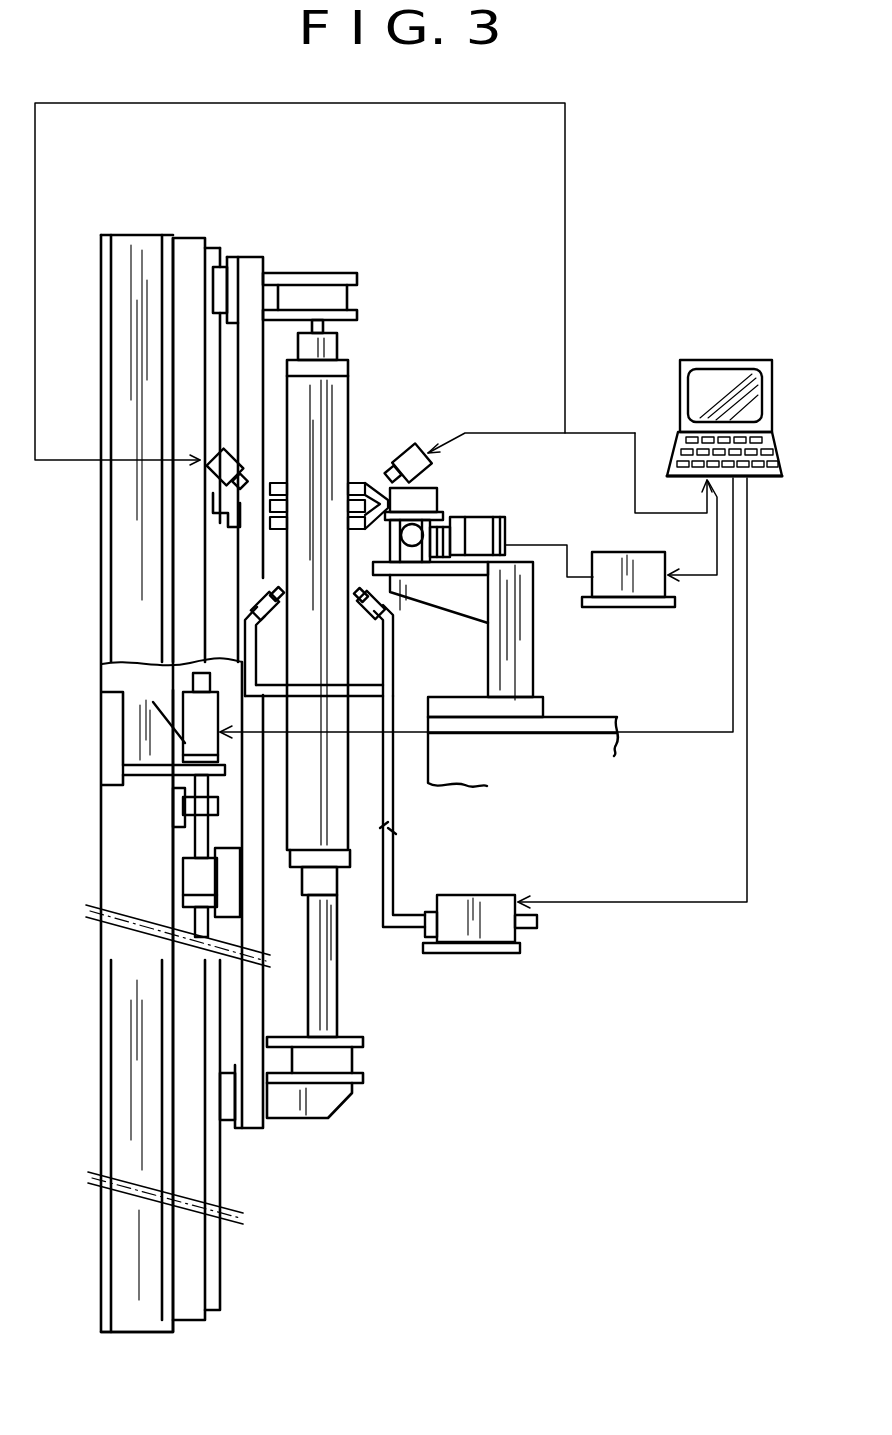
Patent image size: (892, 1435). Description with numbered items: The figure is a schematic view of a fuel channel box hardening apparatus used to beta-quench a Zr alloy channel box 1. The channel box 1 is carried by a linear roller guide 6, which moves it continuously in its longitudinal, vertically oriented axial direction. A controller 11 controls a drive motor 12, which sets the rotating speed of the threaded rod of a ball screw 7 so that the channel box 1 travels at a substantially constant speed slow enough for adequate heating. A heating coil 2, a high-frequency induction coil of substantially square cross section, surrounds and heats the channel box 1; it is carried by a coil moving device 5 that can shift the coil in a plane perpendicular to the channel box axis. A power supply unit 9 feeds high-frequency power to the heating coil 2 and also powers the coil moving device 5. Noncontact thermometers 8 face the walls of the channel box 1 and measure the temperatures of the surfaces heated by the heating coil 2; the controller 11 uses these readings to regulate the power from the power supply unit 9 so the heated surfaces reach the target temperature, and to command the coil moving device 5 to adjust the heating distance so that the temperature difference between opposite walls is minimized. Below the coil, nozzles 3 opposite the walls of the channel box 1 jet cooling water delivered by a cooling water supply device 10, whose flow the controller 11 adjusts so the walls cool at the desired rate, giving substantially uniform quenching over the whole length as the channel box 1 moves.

The channel box 1 is at (351, 407).
The heating coil 2 is at (263, 536).
The nozzles 3 is at (380, 601).
The coil moving device 5 is at (450, 511).
The linear roller guide 6 is at (205, 283).
The ball screw 7 is at (190, 836).
The noncontact thermometers 8 is at (412, 445).
The power supply unit 9 is at (632, 607).
The cooling water supply device 10 is at (485, 953).
The controller 11 is at (713, 360).
The drive motor 12 is at (190, 703).